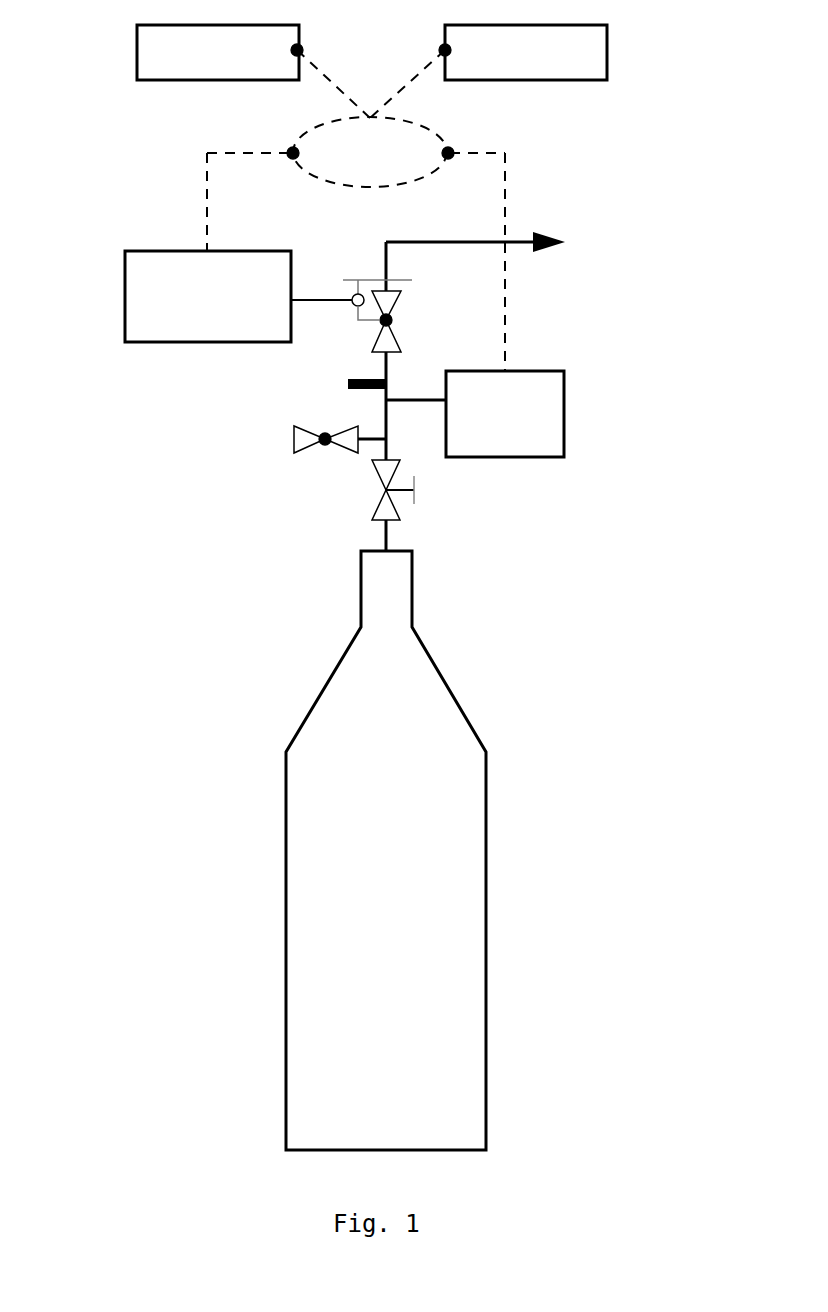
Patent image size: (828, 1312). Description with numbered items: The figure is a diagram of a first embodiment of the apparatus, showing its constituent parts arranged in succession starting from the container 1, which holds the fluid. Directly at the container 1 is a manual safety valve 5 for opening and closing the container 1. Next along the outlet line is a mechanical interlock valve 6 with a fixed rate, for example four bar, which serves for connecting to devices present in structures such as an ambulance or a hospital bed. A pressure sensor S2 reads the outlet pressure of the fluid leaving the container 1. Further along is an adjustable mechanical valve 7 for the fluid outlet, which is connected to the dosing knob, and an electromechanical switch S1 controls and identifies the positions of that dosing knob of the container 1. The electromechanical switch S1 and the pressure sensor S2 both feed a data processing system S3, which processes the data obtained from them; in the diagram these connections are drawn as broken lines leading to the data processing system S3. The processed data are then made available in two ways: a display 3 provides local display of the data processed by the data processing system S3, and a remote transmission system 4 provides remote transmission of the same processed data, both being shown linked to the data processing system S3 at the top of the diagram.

The container 1 is at (496, 965).
The display 3 is at (126, 48).
The remote transmission system 4 is at (618, 49).
The manual safety valve 5 is at (376, 494).
The mechanical interlock valve 6 is at (284, 442).
The adjustable mechanical valve 7 is at (404, 320).
The electromechanical switch S1 is at (113, 300).
The pressure sensor S2 is at (576, 410).
The data processing system S3 is at (462, 134).